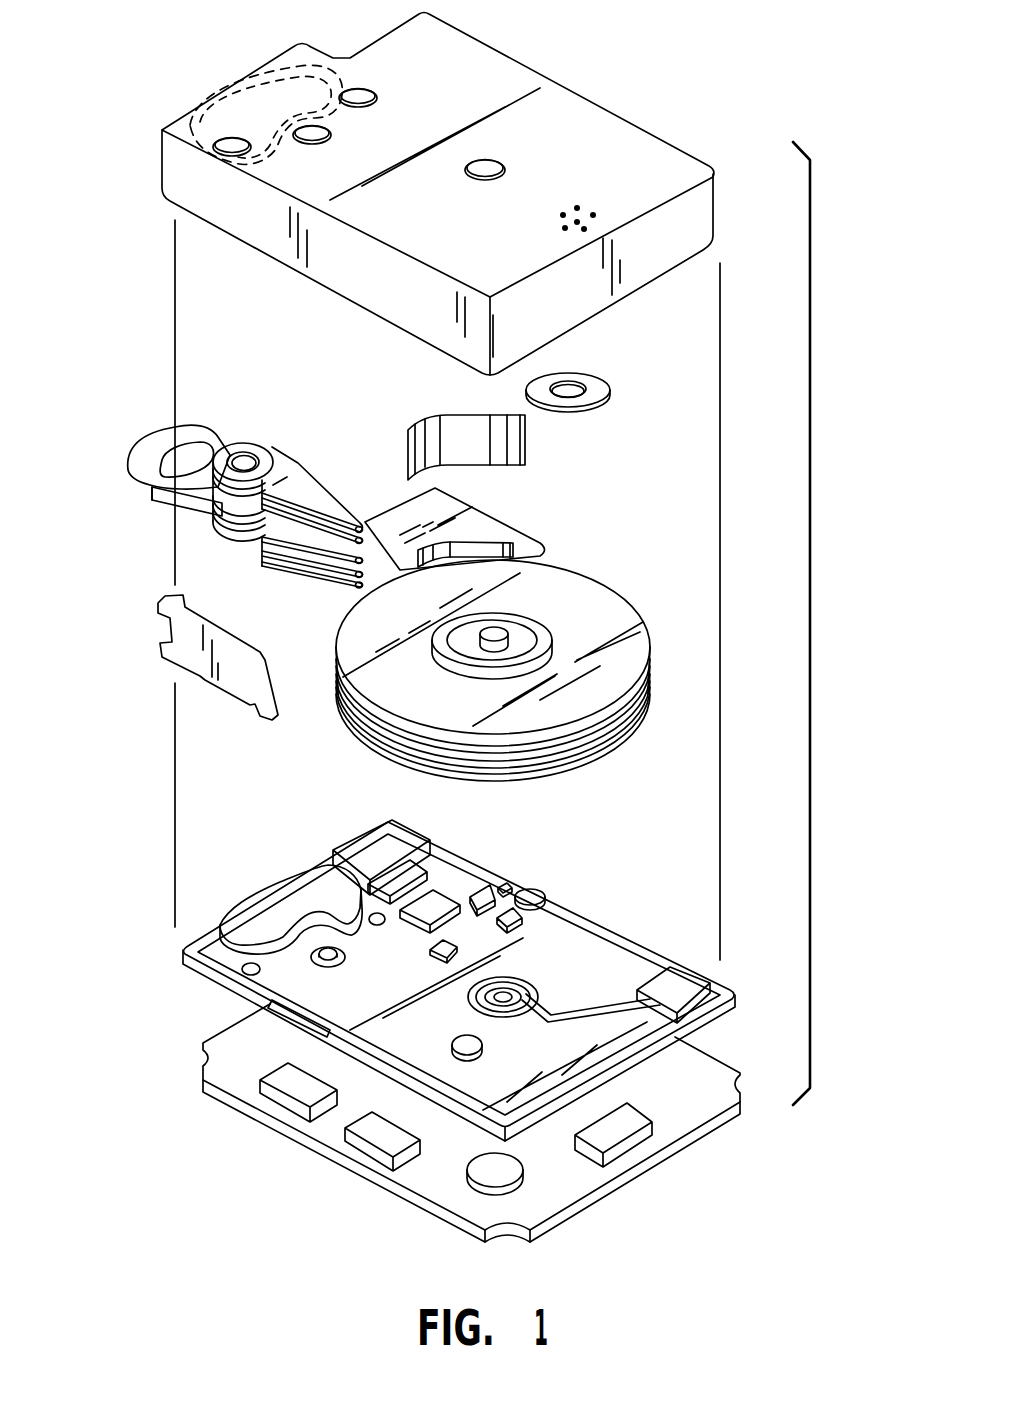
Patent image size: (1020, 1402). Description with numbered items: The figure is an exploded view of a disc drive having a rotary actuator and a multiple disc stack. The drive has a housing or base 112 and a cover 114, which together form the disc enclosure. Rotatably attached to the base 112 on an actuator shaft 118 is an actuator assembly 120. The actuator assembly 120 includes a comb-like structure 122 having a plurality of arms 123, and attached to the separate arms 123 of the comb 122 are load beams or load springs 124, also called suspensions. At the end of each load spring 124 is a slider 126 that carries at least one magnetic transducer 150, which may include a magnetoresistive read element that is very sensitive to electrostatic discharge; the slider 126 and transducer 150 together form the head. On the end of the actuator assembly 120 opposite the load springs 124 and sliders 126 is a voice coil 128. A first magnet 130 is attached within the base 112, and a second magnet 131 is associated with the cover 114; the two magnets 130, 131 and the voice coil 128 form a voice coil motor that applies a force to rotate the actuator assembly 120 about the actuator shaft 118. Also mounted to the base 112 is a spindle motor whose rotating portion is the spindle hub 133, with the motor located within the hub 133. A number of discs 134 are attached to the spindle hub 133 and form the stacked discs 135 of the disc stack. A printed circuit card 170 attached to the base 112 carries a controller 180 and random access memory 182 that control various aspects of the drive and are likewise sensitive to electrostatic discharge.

The base 112 is at (622, 952).
The cover 114 is at (602, 132).
The actuator shaft 118 is at (245, 452).
The actuator assembly 120 is at (197, 505).
The comb-like structure 122 is at (267, 557).
The arms 123 is at (303, 475).
The load springs 124 is at (317, 492).
The slider 126 is at (358, 526).
The voice coil 128 is at (153, 458).
The first magnet 130 is at (242, 915).
The second magnet 131 is at (267, 75).
The spindle hub 133 is at (503, 627).
The discs 134 is at (618, 617).
The disc stack 135 is at (622, 660).
The magnetic transducer 150 is at (392, 518).
The printed circuit card 170 is at (225, 1077).
The controller 180 is at (293, 1087).
The random access memory 182 is at (378, 1135).